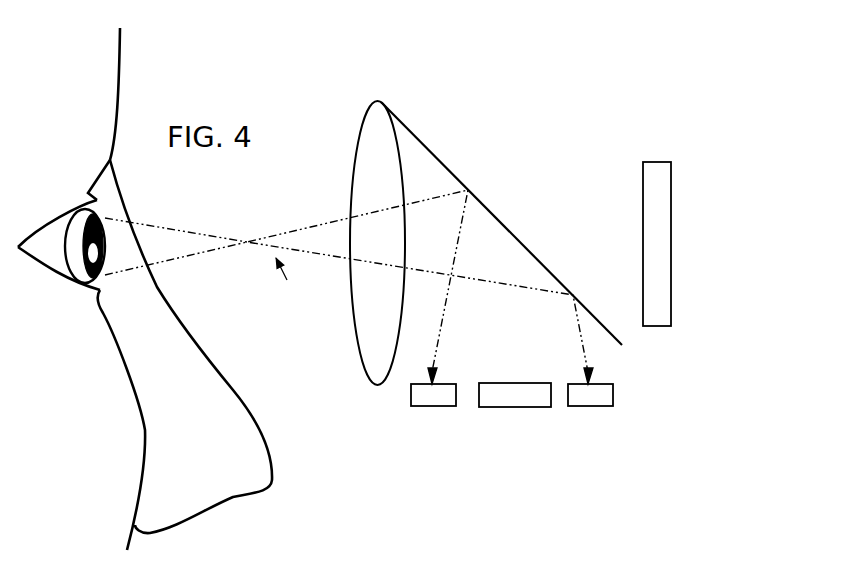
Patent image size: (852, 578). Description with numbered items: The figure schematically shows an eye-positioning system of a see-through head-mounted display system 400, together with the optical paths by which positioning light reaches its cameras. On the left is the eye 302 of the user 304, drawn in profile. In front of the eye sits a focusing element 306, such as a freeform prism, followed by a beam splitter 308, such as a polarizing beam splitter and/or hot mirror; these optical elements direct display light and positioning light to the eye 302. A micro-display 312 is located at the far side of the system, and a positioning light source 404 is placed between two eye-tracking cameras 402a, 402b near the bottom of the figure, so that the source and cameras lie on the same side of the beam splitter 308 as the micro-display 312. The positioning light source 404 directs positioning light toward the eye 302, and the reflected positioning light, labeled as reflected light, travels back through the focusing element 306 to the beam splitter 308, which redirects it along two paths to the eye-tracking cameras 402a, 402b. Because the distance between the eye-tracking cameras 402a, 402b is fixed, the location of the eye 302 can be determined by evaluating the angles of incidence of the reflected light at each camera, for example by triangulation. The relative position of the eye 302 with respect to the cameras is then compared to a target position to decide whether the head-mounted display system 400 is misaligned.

The eye 302 is at (60, 253).
The user 304 is at (72, 83).
The focusing element 306 is at (381, 101).
The beam splitter 308 is at (448, 168).
The micro-display 312 is at (671, 217).
The see-through head-mounted display system 400 is at (542, 59).
The eye-tracking camera 402a is at (411, 392).
The eye-tracking camera 402b is at (613, 393).
The positioning light source 404 is at (502, 407).